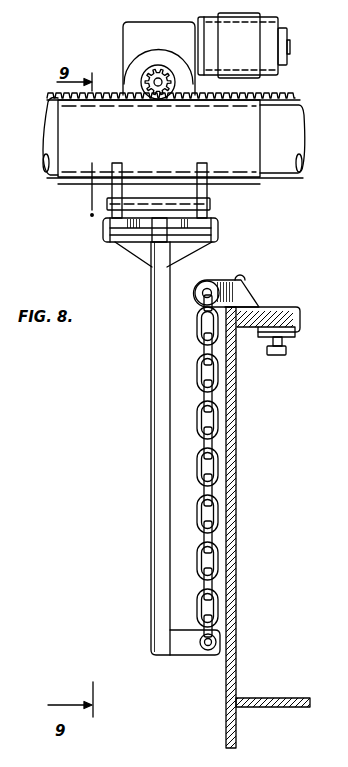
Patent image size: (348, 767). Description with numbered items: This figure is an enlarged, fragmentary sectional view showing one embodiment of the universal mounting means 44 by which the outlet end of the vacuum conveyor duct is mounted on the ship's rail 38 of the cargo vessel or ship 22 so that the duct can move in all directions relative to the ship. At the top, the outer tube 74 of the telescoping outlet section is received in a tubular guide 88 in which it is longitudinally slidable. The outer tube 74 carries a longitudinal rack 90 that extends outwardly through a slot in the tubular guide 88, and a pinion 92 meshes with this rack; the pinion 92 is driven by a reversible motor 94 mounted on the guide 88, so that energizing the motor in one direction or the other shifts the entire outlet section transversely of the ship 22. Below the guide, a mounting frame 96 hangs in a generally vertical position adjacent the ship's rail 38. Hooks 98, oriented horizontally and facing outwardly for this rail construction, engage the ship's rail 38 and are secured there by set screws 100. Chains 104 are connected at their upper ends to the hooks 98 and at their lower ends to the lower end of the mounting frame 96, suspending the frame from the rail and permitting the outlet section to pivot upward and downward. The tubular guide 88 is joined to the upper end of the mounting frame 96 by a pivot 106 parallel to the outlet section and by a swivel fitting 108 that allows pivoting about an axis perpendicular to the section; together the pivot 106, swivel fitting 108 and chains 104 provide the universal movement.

The cargo vessel or ship 22 is at (222, 730).
The ship's rail 38 is at (278, 303).
The universal mounting means 44 is at (130, 431).
The outer tube 74 is at (290, 178).
The tubular guide 88 is at (68, 179).
The longitudinal rack 90 is at (295, 100).
The pinion 92 is at (152, 76).
The reversible motor 94 is at (279, 27).
The mounting frame 96 is at (152, 552).
The hooks 98 is at (301, 318).
The set screws 100 is at (278, 355).
The chains 104 is at (219, 428).
The pivot 106 is at (211, 204).
The swivel fitting 108 is at (125, 234).